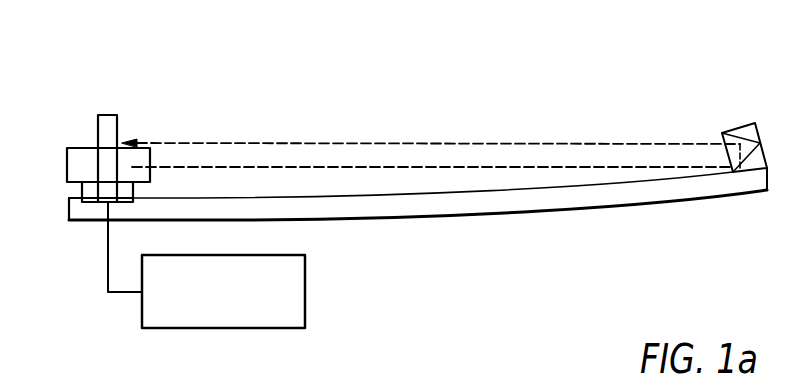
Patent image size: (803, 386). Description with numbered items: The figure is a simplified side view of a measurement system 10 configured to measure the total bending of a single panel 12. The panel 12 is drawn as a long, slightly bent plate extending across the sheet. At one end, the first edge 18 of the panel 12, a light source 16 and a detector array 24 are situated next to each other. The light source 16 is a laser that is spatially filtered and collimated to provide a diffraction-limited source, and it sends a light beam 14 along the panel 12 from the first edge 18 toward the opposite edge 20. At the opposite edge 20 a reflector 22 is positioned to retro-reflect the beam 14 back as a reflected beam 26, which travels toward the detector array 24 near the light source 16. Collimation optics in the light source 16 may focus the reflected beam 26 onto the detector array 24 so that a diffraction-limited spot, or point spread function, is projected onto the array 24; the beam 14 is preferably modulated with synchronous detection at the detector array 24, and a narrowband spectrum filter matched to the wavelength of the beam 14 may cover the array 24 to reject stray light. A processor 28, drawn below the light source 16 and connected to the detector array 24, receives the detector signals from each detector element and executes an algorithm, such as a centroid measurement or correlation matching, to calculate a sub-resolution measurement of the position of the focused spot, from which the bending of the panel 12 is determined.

The measurement system 10 is at (686, 93).
The panel 12 is at (553, 200).
The light beam 14 is at (480, 167).
The light source 16 is at (82, 160).
The first edge 18 is at (69, 212).
The opposite edge 20 is at (768, 185).
The reflector 22 is at (748, 120).
The detector array 24 is at (108, 115).
The reflected beam 26 is at (553, 143).
The processor 28 is at (305, 296).